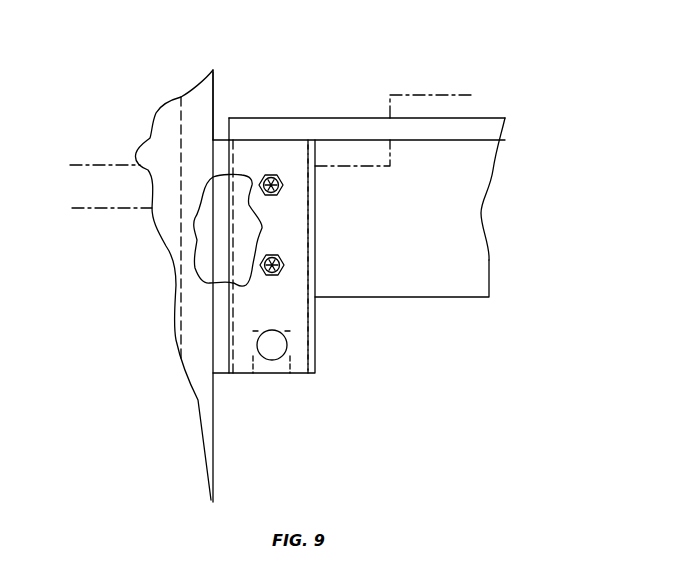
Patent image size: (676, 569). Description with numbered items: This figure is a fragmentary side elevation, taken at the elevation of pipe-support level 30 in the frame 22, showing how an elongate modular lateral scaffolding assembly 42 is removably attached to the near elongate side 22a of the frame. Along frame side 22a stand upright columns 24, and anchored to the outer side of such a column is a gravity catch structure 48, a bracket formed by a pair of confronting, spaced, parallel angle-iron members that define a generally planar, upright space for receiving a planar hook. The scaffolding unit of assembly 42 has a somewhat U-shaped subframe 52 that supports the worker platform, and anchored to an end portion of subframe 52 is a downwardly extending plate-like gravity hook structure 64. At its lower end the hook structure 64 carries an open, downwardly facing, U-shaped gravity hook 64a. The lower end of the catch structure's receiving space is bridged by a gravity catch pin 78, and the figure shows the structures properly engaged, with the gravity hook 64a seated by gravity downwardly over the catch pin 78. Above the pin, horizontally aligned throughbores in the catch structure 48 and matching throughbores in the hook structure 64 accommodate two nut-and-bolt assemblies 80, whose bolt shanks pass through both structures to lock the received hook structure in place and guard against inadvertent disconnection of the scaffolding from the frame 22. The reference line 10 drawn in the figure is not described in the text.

The longitudinal axis / vehicle reference line 10 is at (78, 164).
The frame structure 22 is at (147, 92).
The right side of the frame 22a is at (230, 79).
The upright columns 24 is at (205, 222).
The pipe-support level 30 is at (82, 210).
The modular lateral scaffolding assembly 42 is at (507, 101).
The gravity catch structure 48 is at (226, 268).
The subframe 52 is at (463, 218).
The gravity hook structure 64 is at (310, 274).
The gravity hook 64a is at (260, 363).
The gravity catch pin 78 is at (278, 346).
The nut-and-bolt assemblies 80 is at (284, 263).